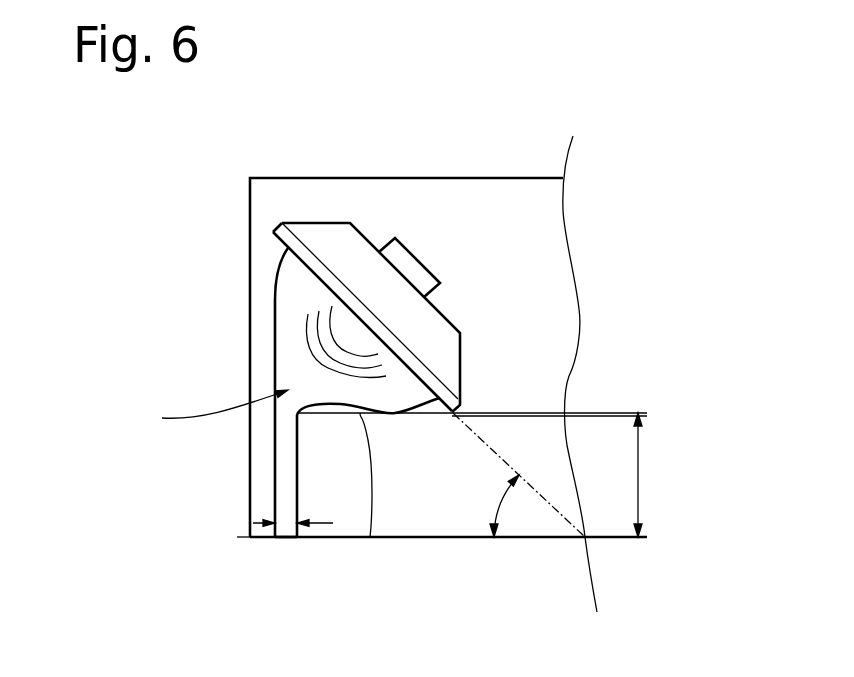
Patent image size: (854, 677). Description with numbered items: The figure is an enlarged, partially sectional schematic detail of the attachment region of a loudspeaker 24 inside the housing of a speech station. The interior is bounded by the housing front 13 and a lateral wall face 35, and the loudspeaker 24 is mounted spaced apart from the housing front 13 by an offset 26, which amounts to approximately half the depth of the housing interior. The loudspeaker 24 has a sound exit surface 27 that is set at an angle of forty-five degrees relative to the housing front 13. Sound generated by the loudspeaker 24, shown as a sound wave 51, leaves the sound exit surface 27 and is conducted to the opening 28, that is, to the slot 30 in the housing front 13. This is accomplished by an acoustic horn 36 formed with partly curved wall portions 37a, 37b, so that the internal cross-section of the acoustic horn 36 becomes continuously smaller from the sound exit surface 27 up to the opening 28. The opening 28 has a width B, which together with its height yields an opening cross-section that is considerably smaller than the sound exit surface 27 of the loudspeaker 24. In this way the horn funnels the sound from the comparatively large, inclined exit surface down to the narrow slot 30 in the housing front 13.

The housing front 13 is at (410, 537).
The loudspeaker 24 is at (363, 273).
The offset 26 is at (640, 483).
The sound exit surface 27 is at (333, 294).
The opening 28 is at (290, 537).
The slot 30 is at (282, 537).
The lateral wall face 35 is at (250, 252).
The acoustic horn 36 is at (217, 418).
The wall portion 37a is at (275, 295).
The wall portion 37b is at (370, 537).
The sound wave 51 is at (322, 360).
The width B is at (243, 537).